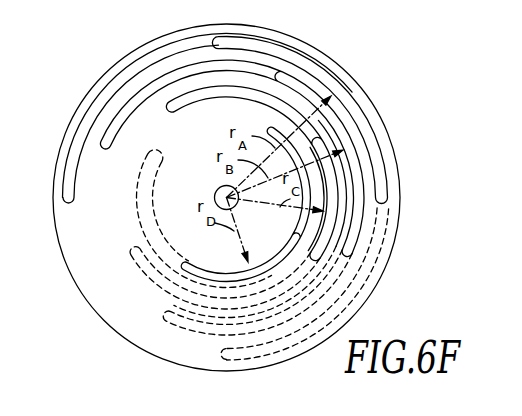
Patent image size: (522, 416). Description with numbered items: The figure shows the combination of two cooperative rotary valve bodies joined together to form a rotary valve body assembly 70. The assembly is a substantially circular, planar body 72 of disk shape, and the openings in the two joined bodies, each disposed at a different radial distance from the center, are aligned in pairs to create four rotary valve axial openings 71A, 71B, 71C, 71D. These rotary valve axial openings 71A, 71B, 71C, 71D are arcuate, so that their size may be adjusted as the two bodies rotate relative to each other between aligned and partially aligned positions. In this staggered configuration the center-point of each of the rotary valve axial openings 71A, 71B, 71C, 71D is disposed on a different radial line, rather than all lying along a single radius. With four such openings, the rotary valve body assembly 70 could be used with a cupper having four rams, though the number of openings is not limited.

The rotary valve body assembly 70 is at (147, 338).
The circular, planar body 72 is at (80, 255).
The rotary valve axial opening 71A is at (265, 46).
The rotary valve axial opening 71B is at (347, 138).
The rotary valve axial opening 71C is at (327, 209).
The rotary valve axial opening 71D is at (237, 266).